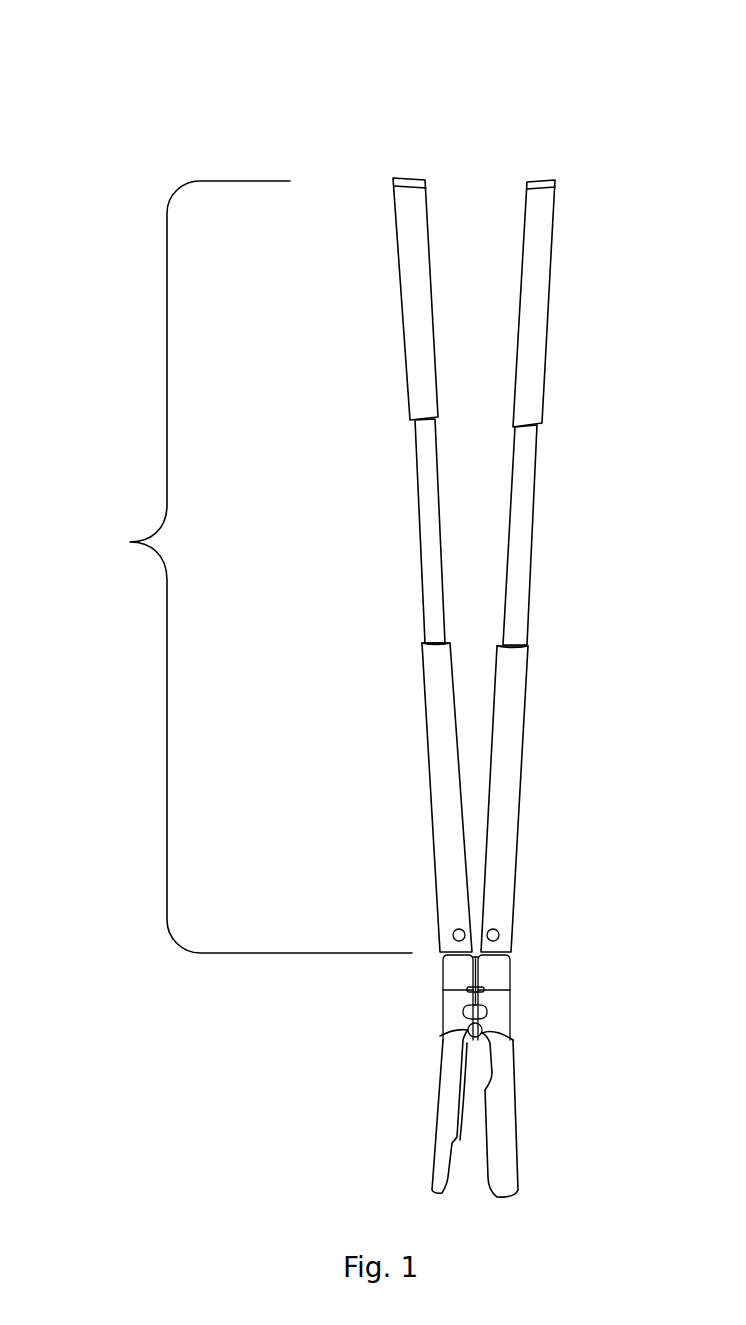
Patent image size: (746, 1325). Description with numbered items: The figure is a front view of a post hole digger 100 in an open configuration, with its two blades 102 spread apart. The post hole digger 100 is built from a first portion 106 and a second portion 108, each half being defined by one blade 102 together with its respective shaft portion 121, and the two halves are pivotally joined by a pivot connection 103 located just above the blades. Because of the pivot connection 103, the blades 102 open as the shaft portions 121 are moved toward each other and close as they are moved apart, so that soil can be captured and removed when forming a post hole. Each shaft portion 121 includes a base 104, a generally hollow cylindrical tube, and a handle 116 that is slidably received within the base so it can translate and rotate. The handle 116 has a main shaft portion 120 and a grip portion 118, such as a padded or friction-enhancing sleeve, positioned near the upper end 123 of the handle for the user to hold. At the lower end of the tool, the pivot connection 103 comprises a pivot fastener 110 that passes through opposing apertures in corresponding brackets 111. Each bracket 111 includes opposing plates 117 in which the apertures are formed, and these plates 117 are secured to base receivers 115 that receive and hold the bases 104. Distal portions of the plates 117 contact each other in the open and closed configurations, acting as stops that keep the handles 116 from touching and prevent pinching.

The post hole digger 100 is at (131, 121).
The blade 102 is at (433, 1163).
The pivot connection 103 is at (562, 1083).
The base 104 is at (430, 800).
The first portion 106 is at (482, 127).
The second portion 108 is at (512, 127).
The pivot fastener 110 is at (500, 1040).
The bracket 111 is at (460, 998).
The base receiver 115 is at (455, 960).
The handle 116 is at (400, 462).
The plate 117 is at (448, 1037).
The grip portion 118 is at (412, 323).
The main shaft portion 120 is at (528, 603).
The shaft portion 121 is at (249, 567).
The upper end 123 is at (562, 181).